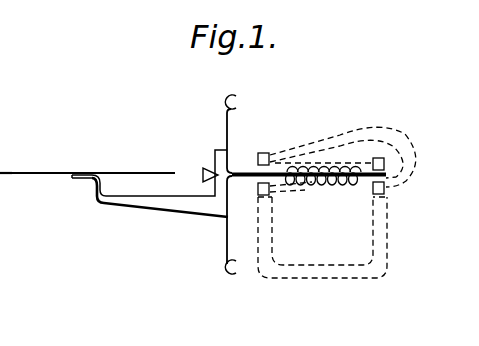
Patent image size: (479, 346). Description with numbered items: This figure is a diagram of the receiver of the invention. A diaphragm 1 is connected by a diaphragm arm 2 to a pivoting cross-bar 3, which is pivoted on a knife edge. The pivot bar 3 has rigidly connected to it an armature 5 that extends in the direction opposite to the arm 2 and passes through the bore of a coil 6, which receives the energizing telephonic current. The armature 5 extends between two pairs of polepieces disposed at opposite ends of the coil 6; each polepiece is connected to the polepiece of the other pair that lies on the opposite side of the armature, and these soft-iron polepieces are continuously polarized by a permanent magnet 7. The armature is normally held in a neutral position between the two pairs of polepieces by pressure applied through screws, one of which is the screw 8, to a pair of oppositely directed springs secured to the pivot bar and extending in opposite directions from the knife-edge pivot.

The diaphragm 1 is at (133, 172).
The diaphragm arm 2 is at (150, 208).
The pivoting cross-bar 3 is at (6, 196).
The armature 5 is at (388, 182).
The coil 6 is at (318, 170).
The permanent magnet 7 is at (326, 272).
The screw 8 is at (246, 107).